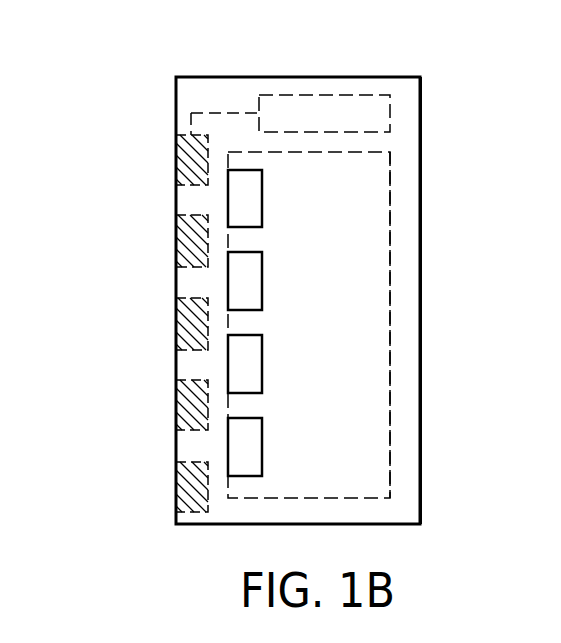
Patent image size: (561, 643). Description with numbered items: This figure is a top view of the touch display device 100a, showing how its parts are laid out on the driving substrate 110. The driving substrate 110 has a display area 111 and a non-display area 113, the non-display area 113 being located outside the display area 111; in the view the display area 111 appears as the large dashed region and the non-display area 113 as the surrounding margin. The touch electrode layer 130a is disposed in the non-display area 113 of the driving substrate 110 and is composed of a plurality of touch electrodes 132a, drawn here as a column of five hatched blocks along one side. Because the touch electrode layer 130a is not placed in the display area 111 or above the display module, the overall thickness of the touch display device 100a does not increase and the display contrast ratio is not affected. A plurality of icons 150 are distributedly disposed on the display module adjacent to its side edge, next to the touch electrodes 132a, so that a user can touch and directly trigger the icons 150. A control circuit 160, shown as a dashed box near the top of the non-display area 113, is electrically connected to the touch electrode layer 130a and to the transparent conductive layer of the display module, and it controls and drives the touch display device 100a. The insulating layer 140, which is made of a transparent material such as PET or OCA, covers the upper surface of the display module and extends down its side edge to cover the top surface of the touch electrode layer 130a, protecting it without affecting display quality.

The touch display device 100a is at (456, 531).
The driving substrate 110 is at (408, 418).
The display area 111 is at (348, 166).
The non-display area 113 is at (405, 156).
The touch electrode layer 130a is at (118, 323).
The touch electrodes 132a is at (176, 162).
The insulating layer 140 is at (422, 315).
The icons 150 is at (253, 195).
The control circuit 160 is at (300, 103).